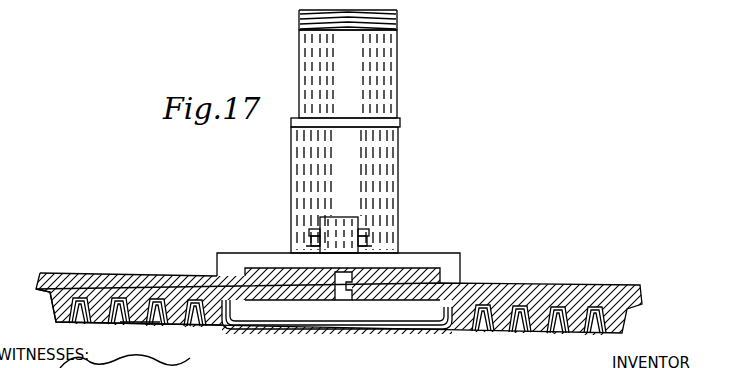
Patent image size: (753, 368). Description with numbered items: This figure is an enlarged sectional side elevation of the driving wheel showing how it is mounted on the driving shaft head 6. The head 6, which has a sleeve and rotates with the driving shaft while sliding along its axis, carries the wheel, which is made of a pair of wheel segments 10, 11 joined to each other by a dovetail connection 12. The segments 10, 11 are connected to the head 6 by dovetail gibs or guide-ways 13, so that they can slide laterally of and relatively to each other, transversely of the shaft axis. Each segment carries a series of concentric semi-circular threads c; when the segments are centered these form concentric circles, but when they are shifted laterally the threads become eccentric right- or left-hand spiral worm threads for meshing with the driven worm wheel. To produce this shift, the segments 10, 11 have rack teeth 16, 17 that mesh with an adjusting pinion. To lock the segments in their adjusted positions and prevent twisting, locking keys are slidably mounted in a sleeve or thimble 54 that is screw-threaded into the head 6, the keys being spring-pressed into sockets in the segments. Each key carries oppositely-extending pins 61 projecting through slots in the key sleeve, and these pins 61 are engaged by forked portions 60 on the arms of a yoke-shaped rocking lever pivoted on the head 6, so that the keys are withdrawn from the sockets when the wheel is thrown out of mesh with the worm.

The head 6 is at (398, 161).
The sleeve or thimble 54 is at (348, 226).
The forked portion 60 is at (318, 231).
The pin 61 is at (311, 233).
The dovetail gibs or guide-ways 13 is at (236, 268).
The wheel segment 10 is at (539, 278).
The wheel segment 11 is at (171, 277).
The dovetail connection 12 is at (344, 291).
The rack teeth 16 is at (366, 305).
The rack teeth 17 is at (321, 285).
The concentric semi-circular threads c is at (140, 322).